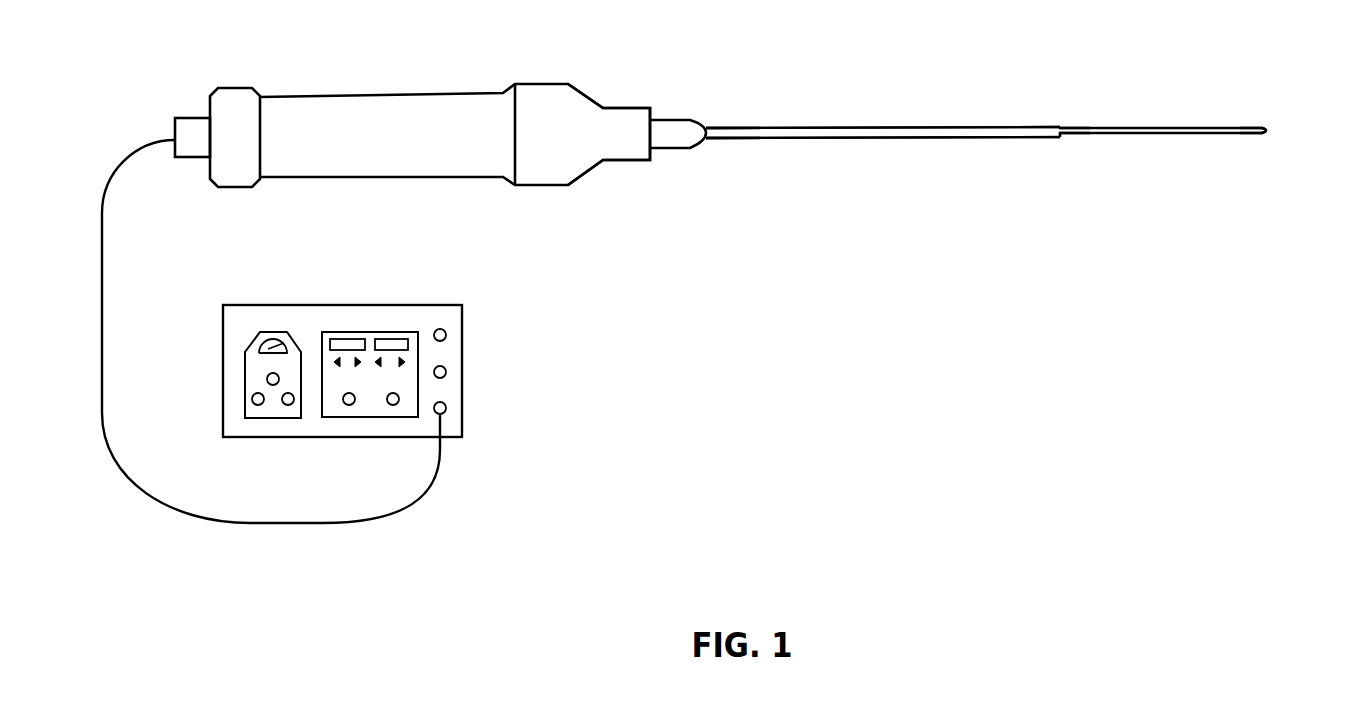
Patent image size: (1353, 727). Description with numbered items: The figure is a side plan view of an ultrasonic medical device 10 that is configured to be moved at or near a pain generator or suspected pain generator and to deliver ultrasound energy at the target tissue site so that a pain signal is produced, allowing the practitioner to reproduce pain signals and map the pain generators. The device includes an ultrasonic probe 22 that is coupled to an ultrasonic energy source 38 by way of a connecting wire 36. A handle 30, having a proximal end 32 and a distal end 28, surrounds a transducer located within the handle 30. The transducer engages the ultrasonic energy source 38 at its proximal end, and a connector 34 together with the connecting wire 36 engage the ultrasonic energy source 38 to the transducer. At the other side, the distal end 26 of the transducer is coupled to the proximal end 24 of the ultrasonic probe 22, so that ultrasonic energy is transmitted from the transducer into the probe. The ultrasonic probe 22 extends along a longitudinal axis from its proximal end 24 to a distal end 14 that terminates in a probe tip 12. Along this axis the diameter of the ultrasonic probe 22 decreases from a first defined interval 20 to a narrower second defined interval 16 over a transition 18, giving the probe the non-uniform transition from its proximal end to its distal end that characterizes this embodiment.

The ultrasonic medical device 10 is at (808, 270).
The probe tip 12 is at (1271, 132).
The distal end of the ultrasonic probe 14 is at (1258, 127).
The second defined interval 16 is at (1150, 136).
The transition 18 is at (1060, 126).
The first defined interval 20 is at (895, 126).
The ultrasonic probe 22 is at (830, 140).
The proximal end of the ultrasonic probe 24 is at (732, 126).
The distal end of the transducer 26 is at (680, 150).
The distal end of the handle 28 is at (620, 107).
The handle 30 is at (393, 92).
The proximal end of the handle 32 is at (238, 87).
The connector 34 is at (192, 115).
The connecting wire 36 is at (103, 275).
The ultrasonic energy source 38 is at (425, 303).